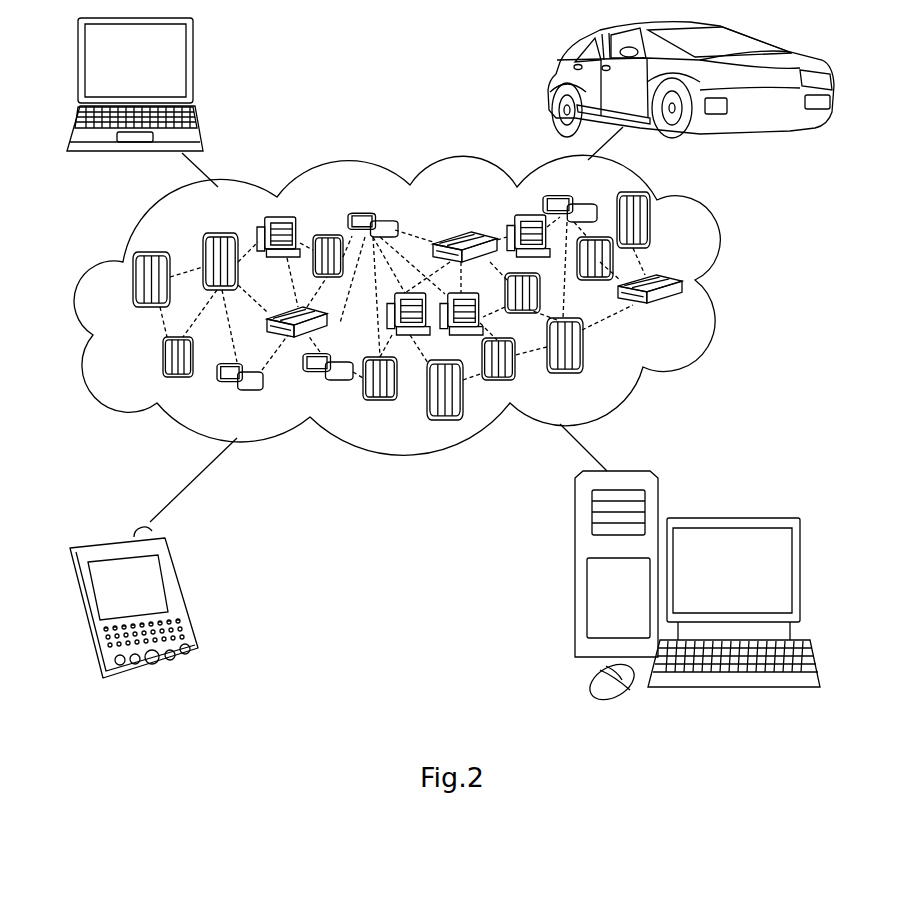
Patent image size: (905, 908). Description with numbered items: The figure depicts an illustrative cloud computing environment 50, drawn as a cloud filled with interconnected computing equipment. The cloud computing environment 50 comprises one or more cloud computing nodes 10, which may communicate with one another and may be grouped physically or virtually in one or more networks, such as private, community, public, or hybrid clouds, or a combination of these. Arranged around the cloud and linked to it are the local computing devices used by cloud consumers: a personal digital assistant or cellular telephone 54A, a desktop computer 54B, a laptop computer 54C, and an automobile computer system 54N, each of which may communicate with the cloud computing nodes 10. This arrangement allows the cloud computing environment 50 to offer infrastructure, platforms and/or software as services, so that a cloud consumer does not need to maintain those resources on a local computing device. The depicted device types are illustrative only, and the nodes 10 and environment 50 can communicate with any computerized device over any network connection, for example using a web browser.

The cloud computing node 10 is at (691, 314).
The cloud computing environment 50 is at (732, 284).
The personal digital assistant or cellular telephone 54A is at (183, 593).
The desktop computer 54B is at (743, 503).
The laptop computer 54C is at (193, 72).
The automobile computer system 54N is at (548, 80).